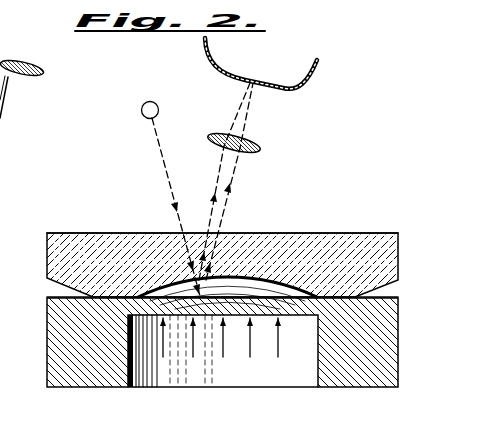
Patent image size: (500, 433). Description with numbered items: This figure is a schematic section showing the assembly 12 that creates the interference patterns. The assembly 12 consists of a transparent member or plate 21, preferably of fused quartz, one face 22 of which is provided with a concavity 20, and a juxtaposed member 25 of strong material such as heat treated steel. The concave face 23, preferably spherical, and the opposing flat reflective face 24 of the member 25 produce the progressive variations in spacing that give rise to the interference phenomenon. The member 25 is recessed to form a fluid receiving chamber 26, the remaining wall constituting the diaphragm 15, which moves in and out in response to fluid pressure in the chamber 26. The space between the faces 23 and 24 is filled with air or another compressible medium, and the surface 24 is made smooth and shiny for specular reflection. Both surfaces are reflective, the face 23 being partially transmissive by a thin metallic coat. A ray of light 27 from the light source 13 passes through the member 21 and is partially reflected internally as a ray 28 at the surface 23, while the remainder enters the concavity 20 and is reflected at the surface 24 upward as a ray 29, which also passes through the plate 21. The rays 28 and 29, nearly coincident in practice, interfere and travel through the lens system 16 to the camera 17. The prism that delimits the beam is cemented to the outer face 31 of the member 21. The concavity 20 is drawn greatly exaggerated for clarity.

The assembly 12 is at (97, 203).
The light source 13 is at (157, 103).
The diaphragm 15 is at (268, 304).
The lens system 16 is at (262, 146).
The camera 17 is at (312, 74).
The concavity 20 is at (244, 290).
The transparent member 21 is at (63, 259).
The face of plate 22 is at (333, 297).
The concave face 23 is at (267, 282).
The reflective face 24 is at (62, 296).
The juxtaposed member 25 is at (58, 348).
The fluid receiving chamber 26 is at (223, 370).
The ray of light 27 is at (166, 172).
The ray 28 is at (212, 214).
The ray 29 is at (220, 223).
The outer face 31 is at (315, 233).